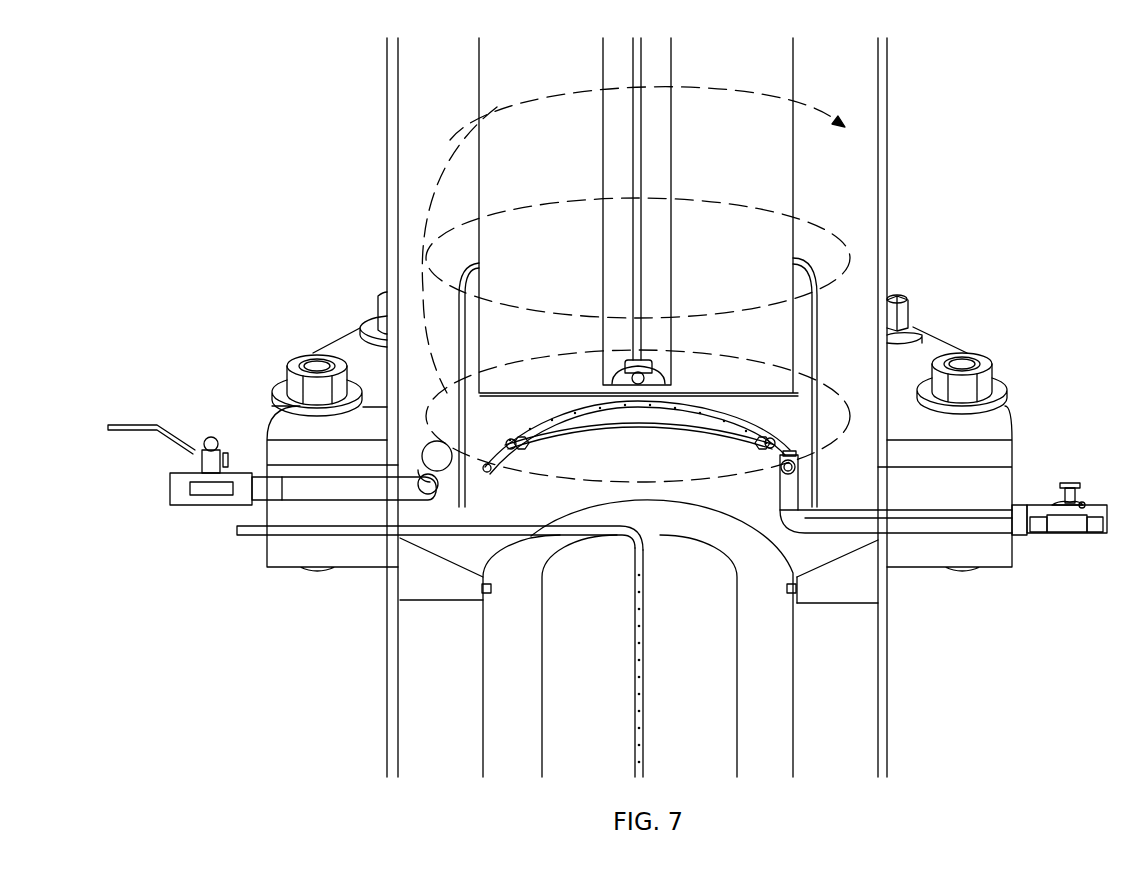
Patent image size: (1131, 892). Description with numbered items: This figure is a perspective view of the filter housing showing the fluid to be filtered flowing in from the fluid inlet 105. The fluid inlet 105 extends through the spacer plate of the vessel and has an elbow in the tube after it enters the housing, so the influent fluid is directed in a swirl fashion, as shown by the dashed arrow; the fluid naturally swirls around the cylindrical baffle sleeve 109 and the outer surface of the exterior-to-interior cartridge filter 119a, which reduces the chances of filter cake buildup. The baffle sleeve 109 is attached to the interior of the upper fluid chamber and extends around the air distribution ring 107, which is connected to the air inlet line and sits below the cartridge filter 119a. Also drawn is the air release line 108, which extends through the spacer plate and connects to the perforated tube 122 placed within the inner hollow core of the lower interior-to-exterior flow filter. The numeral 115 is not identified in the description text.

The fluid inlet 105 is at (435, 485).
The air distribution ring 107 is at (767, 432).
The air release line 108 is at (258, 527).
The cylindrical baffle sleeve 109 is at (815, 313).
The center tube 115 is at (635, 240).
The exterior-to-interior cartridge filter 119a is at (755, 205).
The perforated tube 122 is at (640, 708).